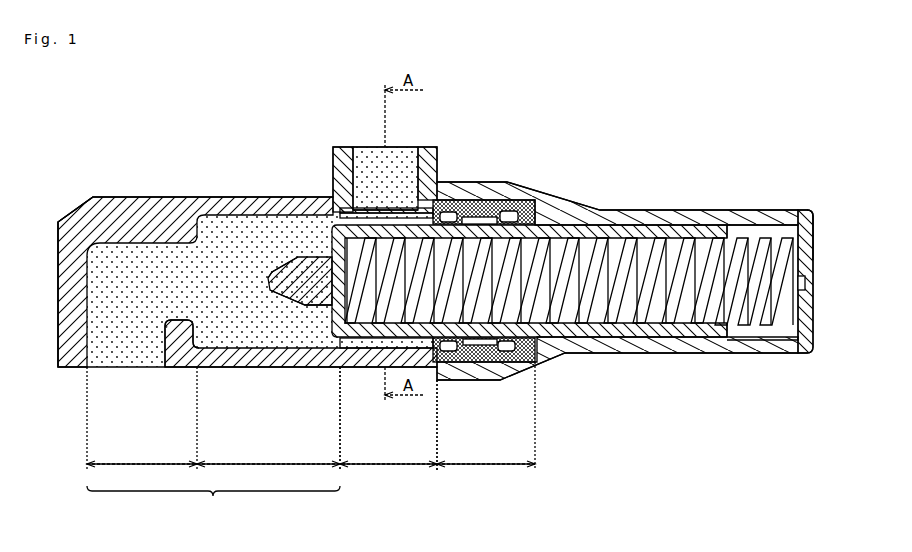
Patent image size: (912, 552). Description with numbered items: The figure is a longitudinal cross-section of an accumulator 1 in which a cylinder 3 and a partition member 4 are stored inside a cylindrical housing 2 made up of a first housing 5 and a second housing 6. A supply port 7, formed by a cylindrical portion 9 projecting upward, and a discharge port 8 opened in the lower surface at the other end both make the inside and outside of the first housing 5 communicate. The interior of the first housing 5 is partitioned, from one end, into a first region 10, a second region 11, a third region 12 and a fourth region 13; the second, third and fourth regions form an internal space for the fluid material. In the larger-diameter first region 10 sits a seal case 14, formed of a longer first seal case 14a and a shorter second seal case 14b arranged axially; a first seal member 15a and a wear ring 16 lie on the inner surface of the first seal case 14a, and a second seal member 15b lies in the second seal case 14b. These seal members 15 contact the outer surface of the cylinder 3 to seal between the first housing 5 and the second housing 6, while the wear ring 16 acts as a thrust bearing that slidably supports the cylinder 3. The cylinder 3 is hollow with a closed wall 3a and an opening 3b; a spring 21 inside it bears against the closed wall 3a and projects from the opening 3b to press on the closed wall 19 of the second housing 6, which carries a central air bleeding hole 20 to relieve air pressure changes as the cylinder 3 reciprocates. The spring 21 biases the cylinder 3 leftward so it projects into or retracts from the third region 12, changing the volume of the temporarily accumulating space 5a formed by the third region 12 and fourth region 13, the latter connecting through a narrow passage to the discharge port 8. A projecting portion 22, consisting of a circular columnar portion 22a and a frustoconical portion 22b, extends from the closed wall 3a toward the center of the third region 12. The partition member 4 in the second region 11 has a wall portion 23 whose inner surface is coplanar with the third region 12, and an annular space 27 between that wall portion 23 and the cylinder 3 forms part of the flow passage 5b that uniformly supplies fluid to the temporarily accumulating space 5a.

The accumulator 1 is at (633, 148).
The housing 2 is at (78, 205).
The cylinder 3 is at (548, 198).
The closed wall 3a is at (330, 243).
The opening 3b is at (728, 240).
The partition member 4 is at (427, 197).
The first housing 5 is at (132, 197).
The temporarily accumulating space 5a is at (213, 503).
The flow passage 5b is at (388, 418).
The second housing 6 is at (763, 210).
The supply port 7 is at (363, 172).
The discharge port 8 is at (163, 360).
The cylindrical portion 9 is at (338, 172).
The first region 10 is at (486, 454).
The second region 11 is at (388, 454).
The third region 12 is at (268, 454).
The fourth region 13 is at (142, 454).
The seal case 14 is at (520, 205).
The first seal case 14a is at (477, 363).
The second seal case 14b is at (513, 363).
The seal member 15 is at (508, 205).
The first seal member 15a is at (447, 380).
The second seal member 15b is at (538, 360).
The wear ring 16 is at (495, 205).
The closed wall 19 is at (813, 240).
The air bleeding hole 20 is at (806, 284).
The spring 21 is at (745, 325).
The projecting portion 22 is at (328, 406).
The circular columnar portion 22a is at (317, 303).
The frustoconical portion 22b is at (283, 293).
The wall portion 23 is at (352, 208).
The annular space 27 is at (395, 208).